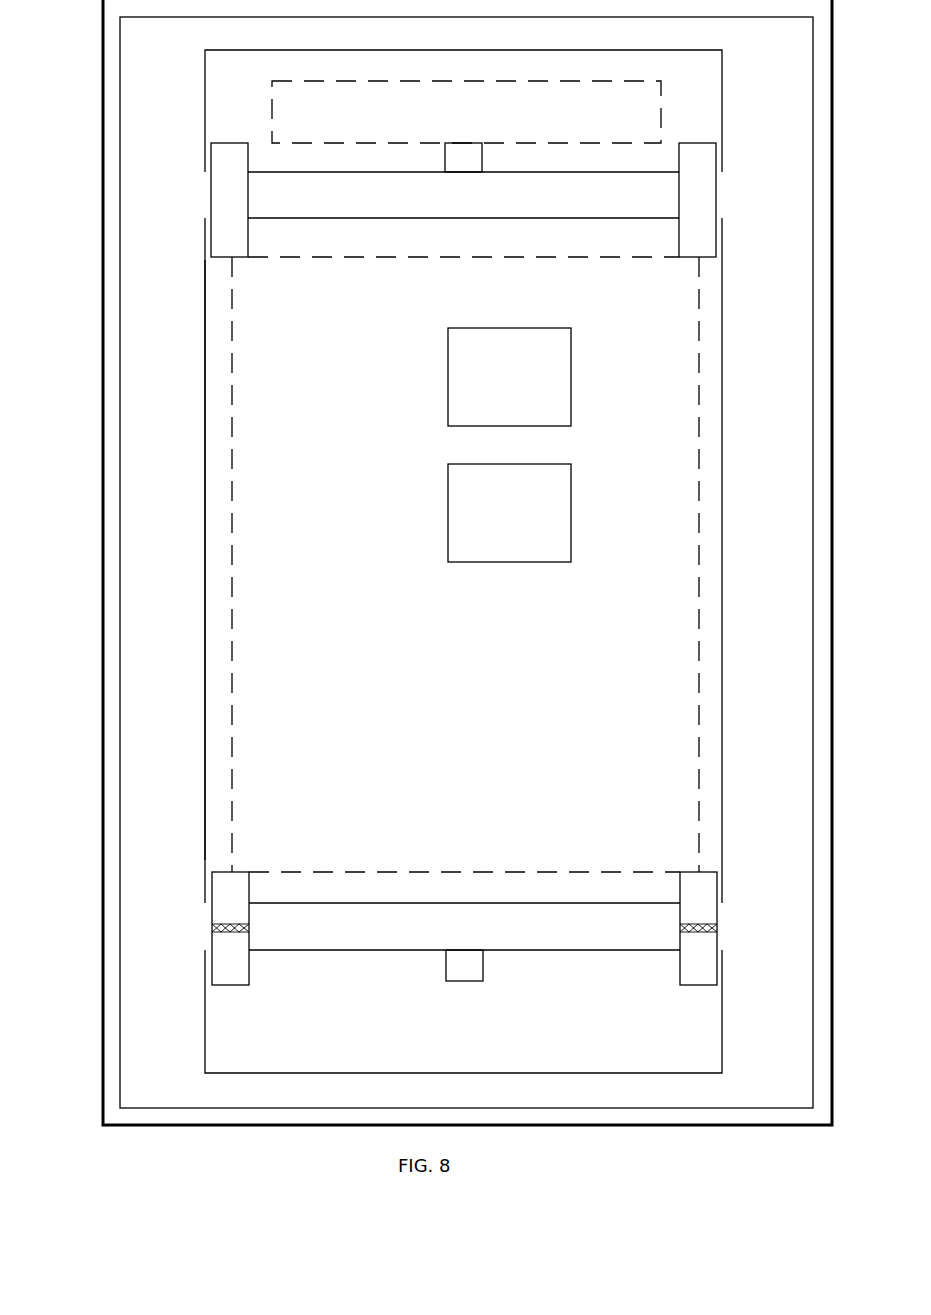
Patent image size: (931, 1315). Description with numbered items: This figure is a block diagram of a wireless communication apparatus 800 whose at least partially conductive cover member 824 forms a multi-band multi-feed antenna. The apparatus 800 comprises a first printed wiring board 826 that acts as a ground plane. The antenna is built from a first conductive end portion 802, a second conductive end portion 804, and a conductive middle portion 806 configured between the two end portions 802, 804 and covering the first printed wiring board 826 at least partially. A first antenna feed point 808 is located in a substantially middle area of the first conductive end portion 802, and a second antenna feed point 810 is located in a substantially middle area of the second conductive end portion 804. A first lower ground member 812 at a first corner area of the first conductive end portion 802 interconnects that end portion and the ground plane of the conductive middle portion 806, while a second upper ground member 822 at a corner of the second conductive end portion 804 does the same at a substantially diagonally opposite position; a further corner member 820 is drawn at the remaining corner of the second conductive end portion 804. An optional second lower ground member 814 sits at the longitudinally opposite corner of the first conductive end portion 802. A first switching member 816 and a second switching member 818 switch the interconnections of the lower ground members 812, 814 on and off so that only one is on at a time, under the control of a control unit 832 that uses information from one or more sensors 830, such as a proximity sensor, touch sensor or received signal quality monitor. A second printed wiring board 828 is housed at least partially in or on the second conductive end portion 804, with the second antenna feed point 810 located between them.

The wireless communication apparatus 800 is at (90, 552).
The first conductive end portion 802 is at (206, 1060).
The second conductive end portion 804 is at (205, 85).
The conductive middle portion 806 is at (206, 330).
The first antenna feed point 808 is at (462, 950).
The second antenna feed point 810 is at (457, 173).
The first lower ground member 812 is at (211, 912).
The second lower ground member 814 is at (718, 910).
The first switching member 816 is at (250, 928).
The second switching member 818 is at (680, 925).
The upper left support 820 is at (211, 185).
The second upper ground member 822 is at (717, 183).
The cover member 824 is at (120, 252).
The first printed wiring board 826 is at (232, 422).
The second printed wiring board 828 is at (300, 120).
The sensors 830 is at (468, 382).
The control unit 832 is at (474, 512).